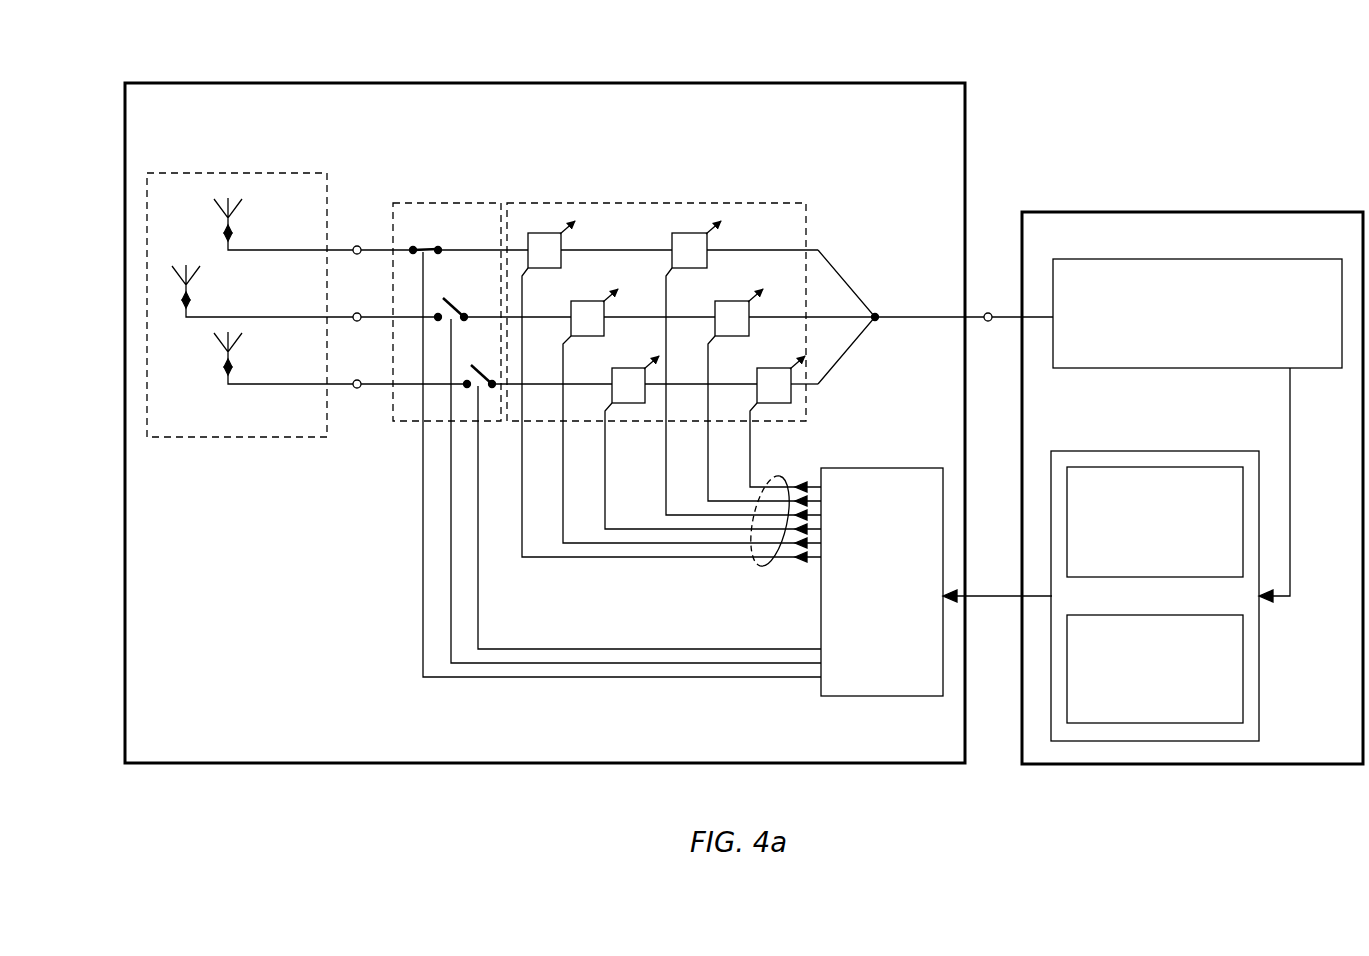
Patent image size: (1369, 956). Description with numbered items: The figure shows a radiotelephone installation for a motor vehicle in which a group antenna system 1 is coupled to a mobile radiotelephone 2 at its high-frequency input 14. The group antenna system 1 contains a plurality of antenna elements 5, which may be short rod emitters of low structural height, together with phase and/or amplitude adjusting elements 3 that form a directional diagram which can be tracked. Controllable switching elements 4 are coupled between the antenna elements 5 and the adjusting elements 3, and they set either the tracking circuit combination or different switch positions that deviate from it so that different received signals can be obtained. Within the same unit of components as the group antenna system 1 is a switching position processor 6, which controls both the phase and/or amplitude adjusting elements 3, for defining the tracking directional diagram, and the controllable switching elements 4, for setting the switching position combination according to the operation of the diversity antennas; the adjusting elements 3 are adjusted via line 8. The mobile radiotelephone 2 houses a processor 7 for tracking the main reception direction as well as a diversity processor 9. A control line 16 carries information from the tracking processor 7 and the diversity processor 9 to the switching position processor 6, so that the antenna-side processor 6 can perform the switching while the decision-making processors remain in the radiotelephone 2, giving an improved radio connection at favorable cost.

The group antenna system 1 is at (415, 118).
The mobile radiotelephone 2 is at (1258, 235).
The phase and/or amplitude adjusting elements 3 is at (765, 215).
The controllable switching elements 4 is at (452, 210).
The antenna elements 5 is at (280, 188).
The switching position processor 6 is at (882, 582).
The processor for tracking the main reception direction 7 is at (1122, 465).
The line 8 is at (755, 560).
The diversity processor 9 is at (1243, 696).
The high-frequency input 14 is at (988, 312).
The control line 16 is at (1007, 598).